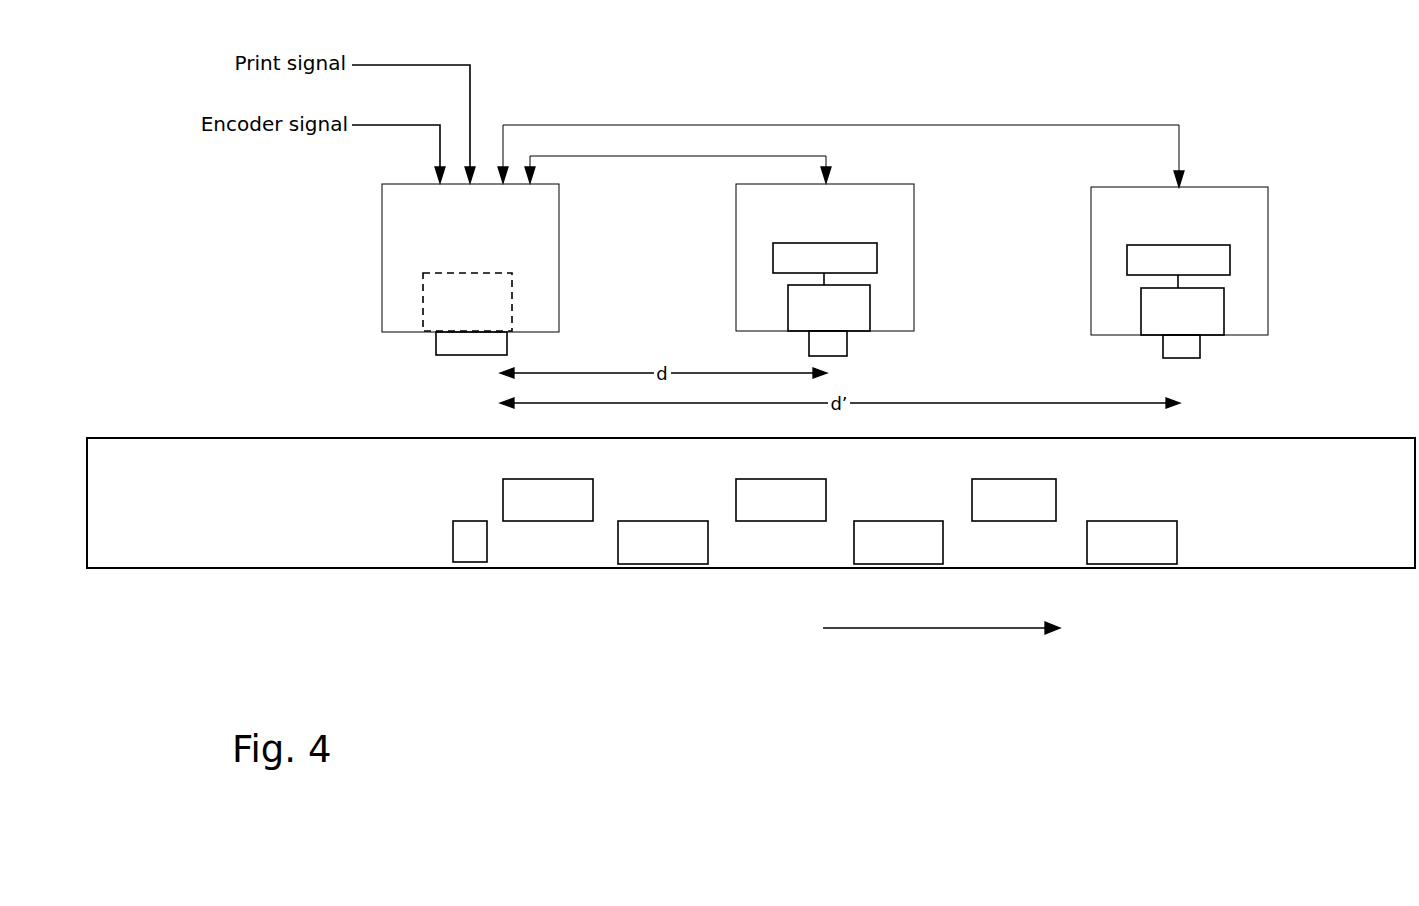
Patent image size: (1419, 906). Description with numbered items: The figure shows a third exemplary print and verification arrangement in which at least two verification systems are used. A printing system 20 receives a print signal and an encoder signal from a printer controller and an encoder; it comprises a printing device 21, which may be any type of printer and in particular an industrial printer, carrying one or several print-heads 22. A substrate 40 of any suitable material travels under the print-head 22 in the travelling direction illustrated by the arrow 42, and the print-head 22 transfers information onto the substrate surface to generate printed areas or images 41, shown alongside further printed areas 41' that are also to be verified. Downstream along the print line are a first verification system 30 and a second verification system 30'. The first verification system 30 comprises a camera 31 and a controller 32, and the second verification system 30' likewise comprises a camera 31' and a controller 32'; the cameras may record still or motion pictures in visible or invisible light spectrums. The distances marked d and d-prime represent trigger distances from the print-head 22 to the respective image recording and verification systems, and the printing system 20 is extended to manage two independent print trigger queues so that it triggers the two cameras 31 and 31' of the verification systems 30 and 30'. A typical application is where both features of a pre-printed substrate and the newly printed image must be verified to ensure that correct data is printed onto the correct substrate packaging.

The printing system 20 is at (430, 272).
The printing device 21 is at (467, 302).
The print-head 22 is at (433, 344).
The verification system 30 is at (825, 270).
The second verification system 30' is at (1179, 272).
The camera 31 is at (829, 308).
The second camera 31' is at (1182, 311).
The controller 32 is at (825, 258).
The second controller 32' is at (1178, 260).
The substrate 40 is at (1350, 438).
The printed area 41 is at (779, 500).
The second printed area 41' is at (897, 542).
The arrow 42 is at (948, 630).